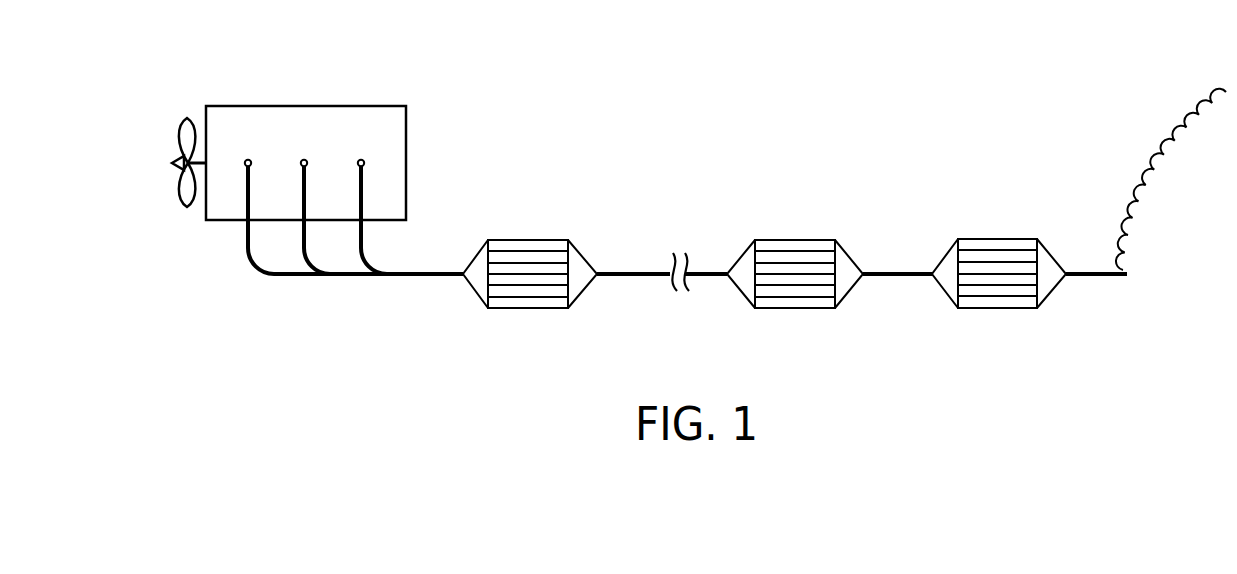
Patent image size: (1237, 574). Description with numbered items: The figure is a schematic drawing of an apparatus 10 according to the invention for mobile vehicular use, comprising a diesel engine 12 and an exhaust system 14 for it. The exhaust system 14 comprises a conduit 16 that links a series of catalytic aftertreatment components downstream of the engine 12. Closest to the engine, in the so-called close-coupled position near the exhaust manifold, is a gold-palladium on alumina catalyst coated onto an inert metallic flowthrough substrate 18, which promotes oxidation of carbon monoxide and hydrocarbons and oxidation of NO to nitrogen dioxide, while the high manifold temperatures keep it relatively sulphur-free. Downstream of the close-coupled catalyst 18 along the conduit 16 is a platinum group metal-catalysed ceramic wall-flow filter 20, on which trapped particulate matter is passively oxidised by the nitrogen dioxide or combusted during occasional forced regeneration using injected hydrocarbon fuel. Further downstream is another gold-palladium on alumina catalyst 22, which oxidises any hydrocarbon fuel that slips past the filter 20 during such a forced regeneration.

The apparatus 10 is at (750, 110).
The diesel engine 12 is at (378, 106).
The exhaust system 14 is at (788, 336).
The conduit 16 is at (425, 279).
The catalyst coated onto inert metallic flowthrough substrate 18 is at (545, 240).
The platinum group metal-catalysed ceramic wall-flow filter 20 is at (810, 240).
The further catalyst 22 is at (1011, 239).